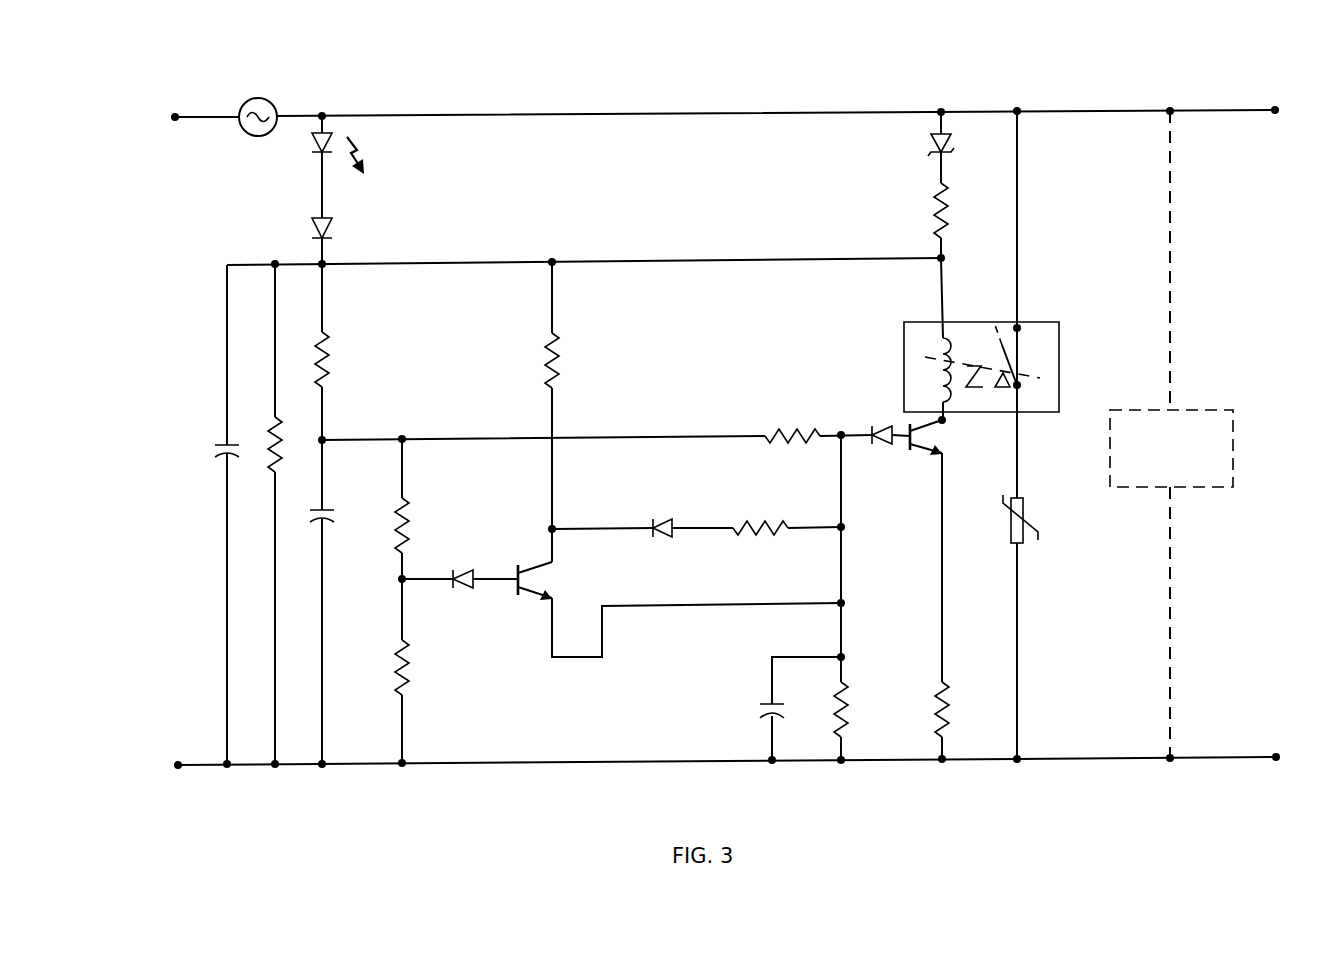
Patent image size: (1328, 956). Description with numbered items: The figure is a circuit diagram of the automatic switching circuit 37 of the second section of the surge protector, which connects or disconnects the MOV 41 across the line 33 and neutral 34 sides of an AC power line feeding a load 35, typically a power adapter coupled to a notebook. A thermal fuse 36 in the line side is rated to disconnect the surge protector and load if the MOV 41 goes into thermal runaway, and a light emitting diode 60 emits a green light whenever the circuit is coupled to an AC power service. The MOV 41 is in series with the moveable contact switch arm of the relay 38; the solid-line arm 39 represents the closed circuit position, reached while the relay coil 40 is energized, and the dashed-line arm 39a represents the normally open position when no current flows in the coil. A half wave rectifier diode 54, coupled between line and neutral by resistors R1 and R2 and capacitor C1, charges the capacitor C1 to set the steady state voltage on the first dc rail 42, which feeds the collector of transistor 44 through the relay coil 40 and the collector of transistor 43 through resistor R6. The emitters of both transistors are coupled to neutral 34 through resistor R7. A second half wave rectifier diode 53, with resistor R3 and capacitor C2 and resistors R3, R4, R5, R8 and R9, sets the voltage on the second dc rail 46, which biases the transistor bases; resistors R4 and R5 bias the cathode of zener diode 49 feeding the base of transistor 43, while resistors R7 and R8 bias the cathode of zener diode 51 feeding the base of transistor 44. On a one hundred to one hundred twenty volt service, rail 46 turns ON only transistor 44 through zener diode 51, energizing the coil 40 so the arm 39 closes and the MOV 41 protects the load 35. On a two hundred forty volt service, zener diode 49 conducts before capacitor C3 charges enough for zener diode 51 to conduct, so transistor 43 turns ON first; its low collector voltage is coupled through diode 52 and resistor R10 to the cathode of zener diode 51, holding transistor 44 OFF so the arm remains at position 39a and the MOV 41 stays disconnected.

The line side of the AC power line 33 is at (172, 128).
The neutral side of the AC power line 34 is at (176, 760).
The load 35 is at (1240, 446).
The thermal fuse 36 is at (262, 99).
The automatic switch or switching circuit 37 is at (1240, 292).
The relay 38 is at (903, 345).
The moveable contact switch arm (closed circuit position) 39 is at (1010, 357).
The relay arm open circuit position 39a is at (1003, 333).
The relay coil 40 is at (946, 335).
The MOV 41 is at (1030, 512).
The first dc bus or rail 42 is at (650, 263).
The transistor 43 is at (548, 572).
The transistor 44 is at (936, 432).
The second dc rail 46 is at (427, 438).
The zener diode 49 is at (458, 568).
The zener diode 51 is at (880, 424).
The diode 52 is at (657, 518).
The half wave voltage rectifier diode 53 is at (333, 229).
The diode 54 is at (931, 145).
The light emitting diode 60 is at (312, 145).
The resistor R1 is at (932, 205).
The resistor R2 is at (283, 424).
The resistor R3 is at (334, 350).
The resistor R4 is at (412, 512).
The resistor R5 is at (412, 655).
The resistor R6 is at (563, 350).
The resistor R7 is at (955, 712).
The resistor R8 is at (855, 712).
The resistor R9 is at (787, 430).
The resistor R10 is at (772, 522).
The capacitor C1 is at (219, 450).
The capacitor C2 is at (340, 515).
The capacitor C3 is at (768, 702).